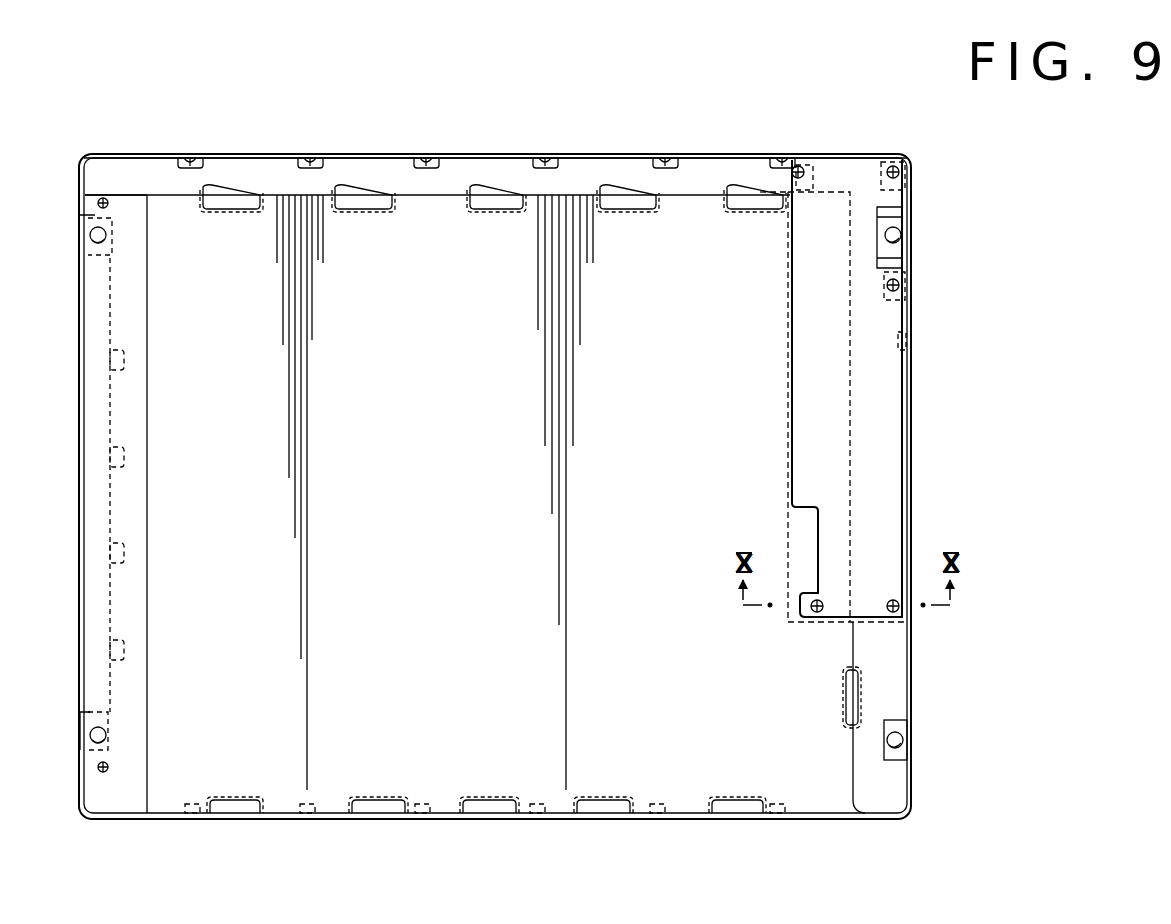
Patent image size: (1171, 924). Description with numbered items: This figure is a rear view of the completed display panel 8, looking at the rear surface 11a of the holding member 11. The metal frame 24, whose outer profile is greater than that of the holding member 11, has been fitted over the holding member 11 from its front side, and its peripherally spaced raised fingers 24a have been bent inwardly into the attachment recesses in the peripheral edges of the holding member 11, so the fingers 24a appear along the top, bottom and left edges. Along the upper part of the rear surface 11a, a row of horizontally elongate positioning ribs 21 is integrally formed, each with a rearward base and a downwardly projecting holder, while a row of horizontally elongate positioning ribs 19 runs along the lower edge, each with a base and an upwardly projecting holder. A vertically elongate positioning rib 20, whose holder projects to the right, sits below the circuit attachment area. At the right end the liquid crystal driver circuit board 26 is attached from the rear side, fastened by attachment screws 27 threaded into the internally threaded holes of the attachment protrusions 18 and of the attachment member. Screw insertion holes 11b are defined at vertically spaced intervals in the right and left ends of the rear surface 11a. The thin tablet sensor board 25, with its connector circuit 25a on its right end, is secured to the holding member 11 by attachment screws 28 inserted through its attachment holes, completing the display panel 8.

The display panel 8 is at (507, 103).
The holding member 11 is at (400, 163).
The rear surface 11a is at (463, 163).
The screw insertion holes 11b is at (902, 235).
The attachment protrusions 18 is at (812, 183).
The horizontally elongate positioning ribs 19 is at (236, 800).
The vertically elongate positioning rib 20 is at (858, 692).
The horizontally elongate positioning ribs 21 is at (237, 209).
The metal frame 24 is at (262, 156).
The raised fingers 24a is at (192, 160).
The tablet sensor board 25 is at (160, 205).
The connector circuit 25a is at (122, 205).
The liquid crystal driver circuit board 26 is at (890, 445).
The attachment screws 27 is at (803, 166).
The attachment screws 28 is at (97, 203).